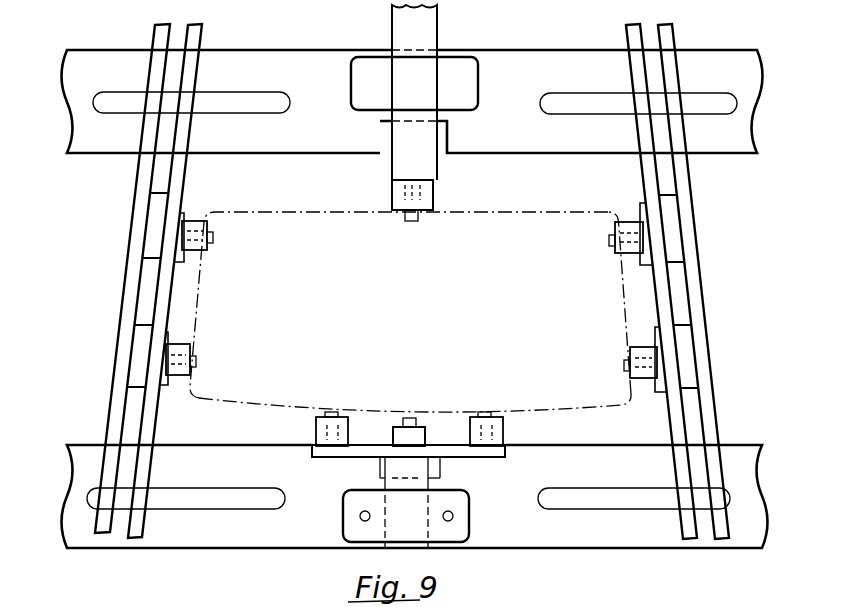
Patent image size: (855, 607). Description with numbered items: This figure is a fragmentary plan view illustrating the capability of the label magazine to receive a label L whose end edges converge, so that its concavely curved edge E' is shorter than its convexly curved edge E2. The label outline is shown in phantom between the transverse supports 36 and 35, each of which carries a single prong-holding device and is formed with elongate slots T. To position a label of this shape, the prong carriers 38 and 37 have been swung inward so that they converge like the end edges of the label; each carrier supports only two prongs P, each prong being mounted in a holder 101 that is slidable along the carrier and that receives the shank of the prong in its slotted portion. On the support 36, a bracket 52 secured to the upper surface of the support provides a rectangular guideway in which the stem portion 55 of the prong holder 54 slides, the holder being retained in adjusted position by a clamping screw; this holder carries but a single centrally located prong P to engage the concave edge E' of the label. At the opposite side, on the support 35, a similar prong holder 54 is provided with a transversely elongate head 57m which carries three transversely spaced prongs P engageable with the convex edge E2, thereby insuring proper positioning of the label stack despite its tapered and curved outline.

The support 36 is at (318, 62).
The support 35 is at (210, 430).
The slot T is at (272, 87).
The stem portion 55 is at (436, 37).
The bracket 52 is at (457, 72).
The prong holder 54 is at (433, 186).
The transversely elongate head 57m is at (478, 458).
The prong carrier 38 is at (98, 428).
The right rail 37 is at (720, 380).
The holder 101 is at (148, 236).
The prong P is at (205, 222).
The label L is at (528, 245).
The edge E' is at (406, 239).
The edge E2 is at (304, 390).